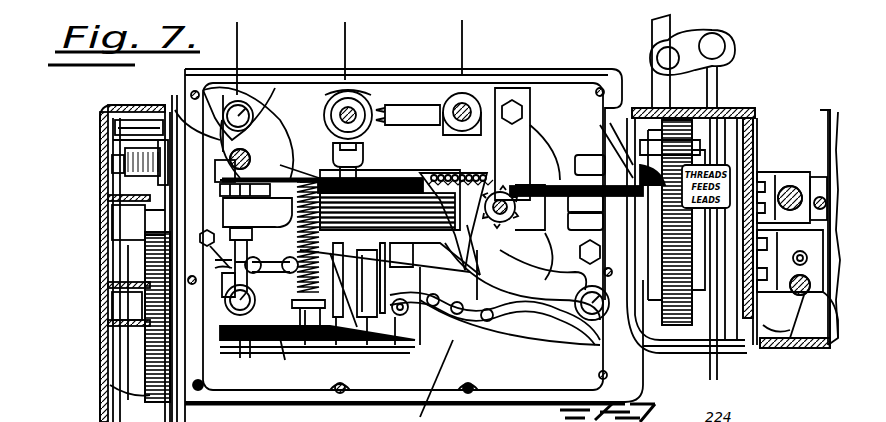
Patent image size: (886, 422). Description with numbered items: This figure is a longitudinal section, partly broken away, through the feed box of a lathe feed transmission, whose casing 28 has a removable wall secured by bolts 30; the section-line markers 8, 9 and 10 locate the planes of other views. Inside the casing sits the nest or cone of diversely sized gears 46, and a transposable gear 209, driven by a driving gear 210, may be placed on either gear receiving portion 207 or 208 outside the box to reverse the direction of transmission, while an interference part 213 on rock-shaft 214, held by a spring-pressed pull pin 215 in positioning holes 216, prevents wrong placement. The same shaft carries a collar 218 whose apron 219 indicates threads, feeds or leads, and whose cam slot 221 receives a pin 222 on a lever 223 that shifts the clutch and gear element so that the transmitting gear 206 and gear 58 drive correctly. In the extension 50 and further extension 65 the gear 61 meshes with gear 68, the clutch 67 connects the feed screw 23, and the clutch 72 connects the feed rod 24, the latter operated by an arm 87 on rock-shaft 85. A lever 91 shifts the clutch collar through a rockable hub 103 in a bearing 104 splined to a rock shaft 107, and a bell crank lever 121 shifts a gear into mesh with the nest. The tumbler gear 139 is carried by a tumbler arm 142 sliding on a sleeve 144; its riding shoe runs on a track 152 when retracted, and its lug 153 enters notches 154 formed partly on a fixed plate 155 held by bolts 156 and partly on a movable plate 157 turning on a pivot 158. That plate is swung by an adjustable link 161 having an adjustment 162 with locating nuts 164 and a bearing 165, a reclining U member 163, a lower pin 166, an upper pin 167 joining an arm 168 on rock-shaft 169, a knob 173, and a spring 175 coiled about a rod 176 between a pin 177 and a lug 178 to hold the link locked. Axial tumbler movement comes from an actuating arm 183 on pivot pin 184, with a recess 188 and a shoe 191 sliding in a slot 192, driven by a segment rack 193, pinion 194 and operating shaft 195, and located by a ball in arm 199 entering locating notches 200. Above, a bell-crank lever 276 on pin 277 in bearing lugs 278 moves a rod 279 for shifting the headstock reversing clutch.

The section line 8 is at (237, 25).
The section line 9 is at (477, 250).
The section line 10 is at (393, 243).
The feed screw 23 is at (818, 177).
The feed rod 24 is at (828, 345).
The casing 28 is at (553, 64).
The bolts 30 is at (472, 392).
The group of diversely sized gears 46 is at (540, 135).
The extension of the casing 50 is at (740, 107).
The gear 58 is at (652, 348).
The gear 61 is at (742, 147).
The further extension of the feed box 65 is at (775, 110).
The clutch 67 is at (768, 177).
The gear 68 is at (740, 350).
The clutch 72 is at (770, 295).
The rock-shaft 85 is at (790, 345).
The arm 87 is at (800, 340).
The lever 91 is at (362, 172).
The rockable hub 103 is at (335, 105).
The bearing 104 is at (338, 90).
The rock shaft 107 is at (350, 112).
The bell crank lever 121 is at (405, 108).
The tumbler gear 139 is at (378, 347).
The tumbler arm 142 is at (296, 364).
The sleeve 144 is at (258, 372).
The track 152 is at (255, 353).
The lug 153 is at (303, 350).
The notches 154 is at (485, 325).
The plate 155 is at (520, 310).
The bolts 156 is at (225, 300).
The movable plate 157 is at (436, 381).
The pivot 158 is at (580, 313).
The adjustable link 161 is at (258, 110).
The adjustment 162 is at (215, 178).
The reclining U member 163 is at (256, 125).
The locating nuts 164 is at (215, 190).
The bearing 165 is at (205, 212).
The pin 166 is at (222, 330).
The pin 167 is at (220, 88).
The arm 168 is at (205, 88).
The rock-shaft 169 is at (180, 100).
The knob 173 is at (252, 157).
The spring 175 is at (257, 212).
The rod 176 is at (304, 165).
The pin 177 is at (338, 347).
The lug 178 is at (302, 165).
The actuating arm 183 is at (485, 305).
The pivot pin 184 is at (466, 105).
The recess 188 is at (458, 303).
The shoe 191 is at (410, 312).
The slot 192 is at (405, 350).
The segment rack 193 is at (456, 221).
The pinion 194 is at (520, 190).
The operating shaft 195 is at (578, 256).
The arm 199 is at (510, 135).
The locating notches 200 is at (458, 175).
The transmitting gear 206 is at (680, 330).
The gear receiving portion 207 is at (110, 222).
The gear receiving portion 208 is at (110, 312).
The transposable gear 209 is at (155, 355).
The driving gear 210 is at (160, 390).
The interference part 213 is at (105, 185).
The rock-shaft 214 is at (400, 185).
The spring-pressed pull pin 215 is at (110, 165).
The positioning holes 216 is at (178, 110).
The collar 218 is at (600, 225).
The apron 219 is at (813, 227).
The cam slot 221 is at (585, 204).
The pin 222 is at (665, 108).
The lever 223 is at (590, 165).
The bell-crank lever 276 is at (730, 35).
The pin 277 is at (657, 55).
The bearing lugs 278 is at (726, 47).
The rod 279 is at (720, 78).